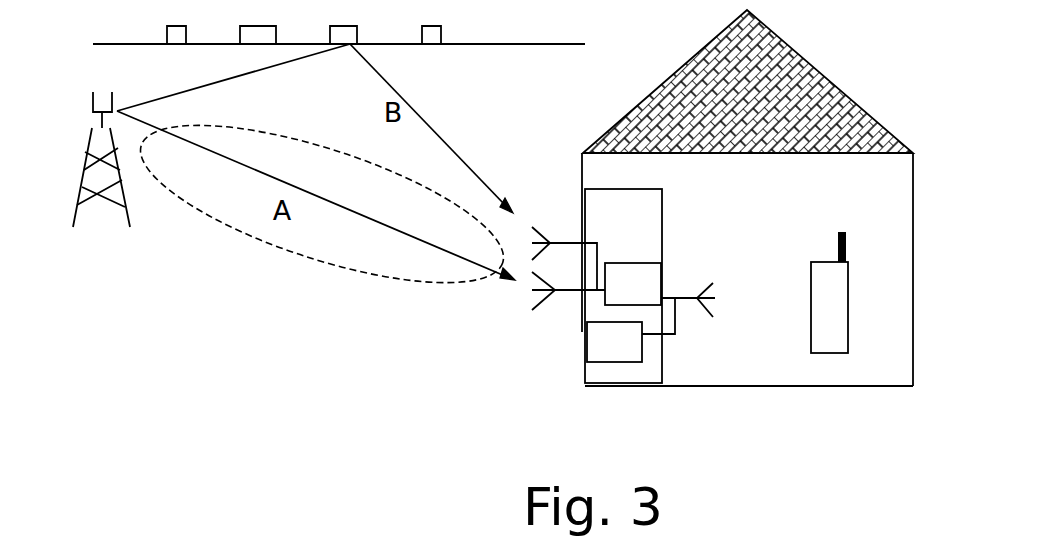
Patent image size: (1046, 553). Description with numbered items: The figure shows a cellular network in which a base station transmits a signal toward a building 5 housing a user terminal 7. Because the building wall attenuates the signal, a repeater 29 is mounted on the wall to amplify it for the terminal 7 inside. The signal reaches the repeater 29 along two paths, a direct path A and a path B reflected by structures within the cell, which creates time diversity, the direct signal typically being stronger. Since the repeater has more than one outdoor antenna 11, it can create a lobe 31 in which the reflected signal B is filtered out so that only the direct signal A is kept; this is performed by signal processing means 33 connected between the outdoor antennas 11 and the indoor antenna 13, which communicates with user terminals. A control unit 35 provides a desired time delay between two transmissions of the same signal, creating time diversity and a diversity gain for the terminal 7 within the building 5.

The building 5 is at (833, 211).
The user terminal 7 is at (848, 298).
The outdoor antennas 11 is at (568, 292).
The indoor antenna 13 is at (677, 287).
The repeater 29 is at (599, 231).
The lobe 31 is at (275, 260).
The signal processing means 33 is at (608, 298).
The control unit 35 is at (590, 356).